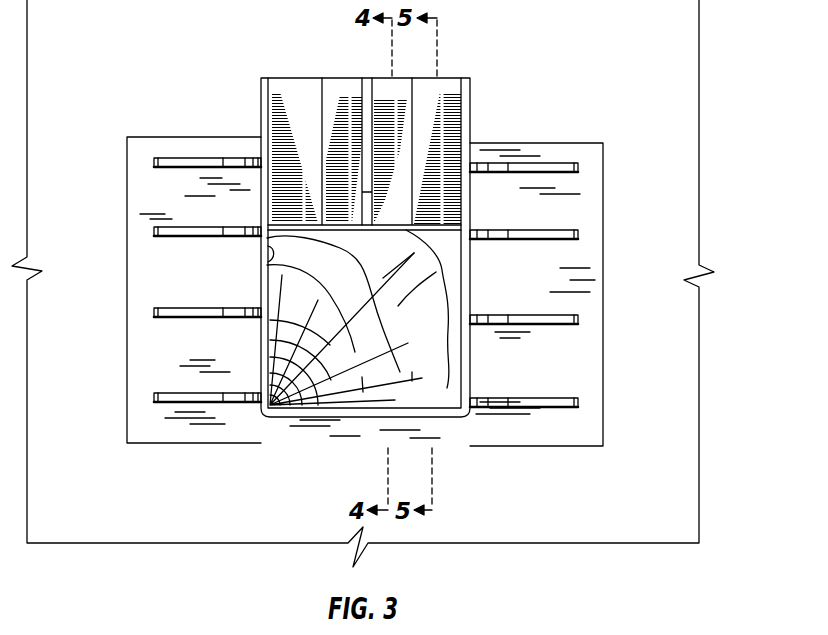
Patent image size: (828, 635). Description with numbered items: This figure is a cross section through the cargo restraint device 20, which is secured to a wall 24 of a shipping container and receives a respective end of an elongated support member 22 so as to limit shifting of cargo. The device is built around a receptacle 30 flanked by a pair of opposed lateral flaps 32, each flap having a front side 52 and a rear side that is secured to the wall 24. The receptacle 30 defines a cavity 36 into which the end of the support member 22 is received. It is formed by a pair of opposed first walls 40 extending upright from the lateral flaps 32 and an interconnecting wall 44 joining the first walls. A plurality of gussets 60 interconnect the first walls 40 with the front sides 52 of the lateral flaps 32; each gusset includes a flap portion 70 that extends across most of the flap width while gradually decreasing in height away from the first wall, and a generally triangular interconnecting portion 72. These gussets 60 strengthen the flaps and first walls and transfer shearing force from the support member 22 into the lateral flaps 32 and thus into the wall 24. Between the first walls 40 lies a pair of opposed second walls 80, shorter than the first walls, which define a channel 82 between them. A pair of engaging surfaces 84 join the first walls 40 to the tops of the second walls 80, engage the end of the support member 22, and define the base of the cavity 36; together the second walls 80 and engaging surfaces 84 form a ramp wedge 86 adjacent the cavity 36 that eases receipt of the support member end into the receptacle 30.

The cargo restraint device 20 is at (681, 138).
The support member 22 is at (366, 290).
The wall 24 is at (96, 272).
The receptacle 30 is at (473, 133).
The lateral flap 32 is at (603, 293).
The cavity 36 is at (269, 262).
The first wall 40 is at (463, 278).
The interconnecting wall 44 is at (322, 422).
The front side 52 is at (168, 197).
The gusset 60 is at (571, 164).
The flap portion 70 is at (161, 157).
The interconnecting portion 72 is at (489, 232).
The second wall 80 is at (323, 118).
The channel 82 is at (323, 81).
The engaging surface 84 is at (282, 93).
The ramp wedge 86 is at (430, 97).